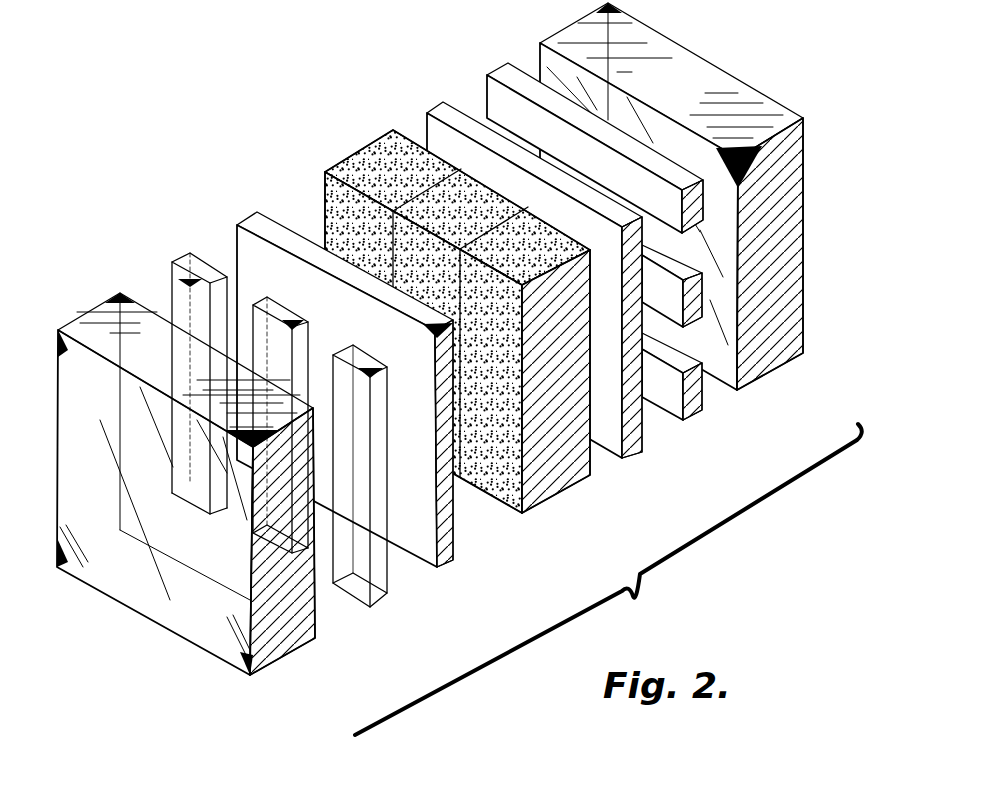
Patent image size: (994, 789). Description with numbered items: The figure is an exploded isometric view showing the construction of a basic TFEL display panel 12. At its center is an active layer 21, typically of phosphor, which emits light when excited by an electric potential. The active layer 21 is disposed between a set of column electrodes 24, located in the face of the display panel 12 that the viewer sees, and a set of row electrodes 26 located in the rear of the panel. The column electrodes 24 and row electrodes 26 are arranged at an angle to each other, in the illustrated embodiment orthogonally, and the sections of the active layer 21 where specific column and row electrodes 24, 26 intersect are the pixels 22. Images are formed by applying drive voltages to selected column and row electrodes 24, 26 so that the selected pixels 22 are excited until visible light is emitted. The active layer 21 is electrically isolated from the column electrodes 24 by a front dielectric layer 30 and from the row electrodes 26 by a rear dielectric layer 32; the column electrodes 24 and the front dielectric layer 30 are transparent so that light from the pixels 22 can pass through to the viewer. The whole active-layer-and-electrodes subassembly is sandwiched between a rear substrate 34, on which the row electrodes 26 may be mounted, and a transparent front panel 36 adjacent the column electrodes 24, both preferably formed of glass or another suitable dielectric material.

The TFEL display panel 12 is at (636, 596).
The active layer 21 is at (560, 495).
The pixels 22 is at (448, 197).
The column electrodes 24 is at (182, 253).
The row electrodes 26 is at (492, 87).
The front dielectric layer 30 is at (453, 562).
The rear dielectric layer 32 is at (633, 453).
The rear substrate 34 is at (773, 367).
The front panel 36 is at (303, 642).